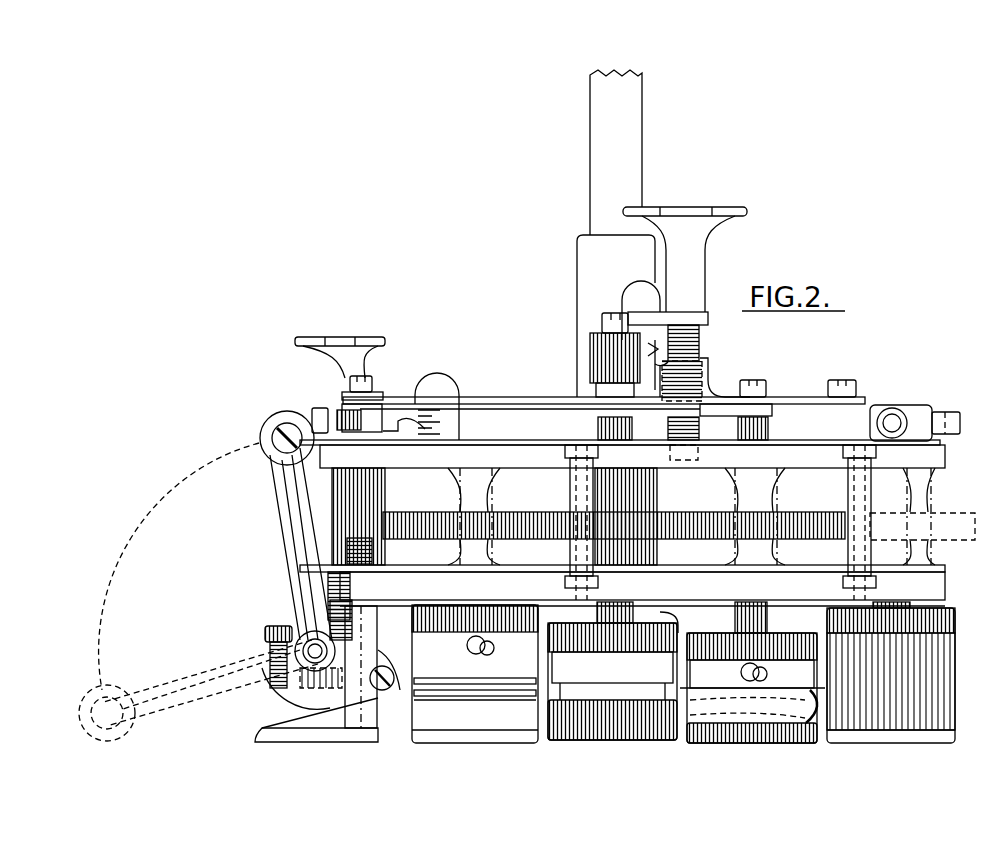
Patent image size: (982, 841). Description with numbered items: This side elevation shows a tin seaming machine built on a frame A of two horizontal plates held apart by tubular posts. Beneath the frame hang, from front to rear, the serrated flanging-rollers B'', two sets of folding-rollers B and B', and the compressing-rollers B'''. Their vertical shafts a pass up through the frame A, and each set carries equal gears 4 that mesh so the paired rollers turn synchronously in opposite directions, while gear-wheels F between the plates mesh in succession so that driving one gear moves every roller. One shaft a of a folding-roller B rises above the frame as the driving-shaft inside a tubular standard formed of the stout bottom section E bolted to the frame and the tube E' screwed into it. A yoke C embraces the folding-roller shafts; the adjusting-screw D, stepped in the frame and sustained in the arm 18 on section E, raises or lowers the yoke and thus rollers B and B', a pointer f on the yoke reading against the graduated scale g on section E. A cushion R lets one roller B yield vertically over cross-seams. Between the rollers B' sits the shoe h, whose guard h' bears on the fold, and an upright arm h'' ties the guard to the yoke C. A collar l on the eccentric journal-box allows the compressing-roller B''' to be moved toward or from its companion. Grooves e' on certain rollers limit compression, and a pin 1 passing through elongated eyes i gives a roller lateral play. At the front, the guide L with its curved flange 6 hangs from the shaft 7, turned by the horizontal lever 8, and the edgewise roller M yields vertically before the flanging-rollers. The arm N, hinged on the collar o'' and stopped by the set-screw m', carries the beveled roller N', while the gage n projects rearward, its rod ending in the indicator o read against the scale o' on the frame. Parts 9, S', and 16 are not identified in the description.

The top rail 9 is at (604, 396).
The frame A is at (622, 523).
The gear-wheels F is at (679, 514).
The shaft 7 is at (358, 516).
The upright arm h'' is at (640, 516).
The shafts a is at (768, 428).
The tube E' is at (616, 152).
The standard-section E is at (618, 316).
The adjusting-screw D is at (685, 259).
The arm 18 is at (710, 320).
The cushion R is at (590, 357).
The graduated scale g is at (649, 340).
The pointer f is at (661, 350).
The yoke C is at (705, 377).
The collar l is at (915, 415).
The funnel S' is at (340, 357).
The screw 16 is at (353, 393).
The horizontal lever 8 is at (380, 404).
The indicator o is at (388, 496).
The graduated scale o' is at (450, 418).
The collar o'' is at (343, 628).
The vertical roller N' is at (279, 435).
The arm N is at (195, 592).
The roller M is at (272, 638).
The set-screw m' is at (309, 682).
The side flange 6 is at (298, 696).
The guide L is at (316, 728).
The gage n is at (372, 667).
The gears 4 is at (675, 631).
The flanging-rollers B'' is at (475, 674).
The circumferential grooves e' is at (475, 689).
The elongated eyes i is at (775, 674).
The pin 1 is at (605, 658).
The folding-rollers B is at (612, 681).
The folding-rollers B' is at (752, 688).
The guard h' is at (682, 620).
The shoe h is at (758, 725).
The compressing-rollers B''' is at (891, 675).